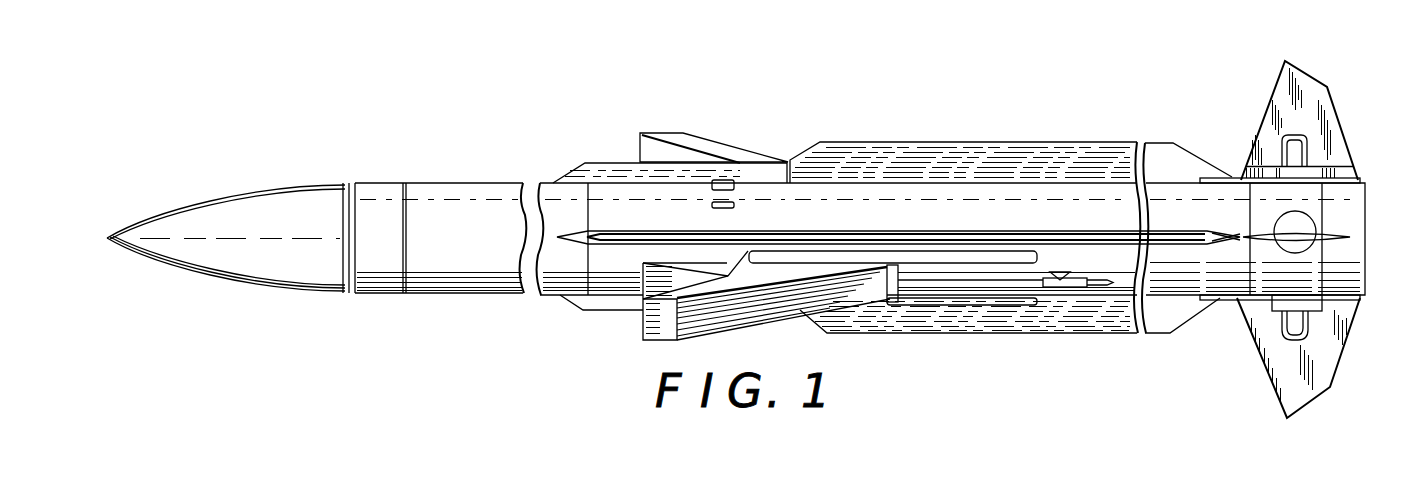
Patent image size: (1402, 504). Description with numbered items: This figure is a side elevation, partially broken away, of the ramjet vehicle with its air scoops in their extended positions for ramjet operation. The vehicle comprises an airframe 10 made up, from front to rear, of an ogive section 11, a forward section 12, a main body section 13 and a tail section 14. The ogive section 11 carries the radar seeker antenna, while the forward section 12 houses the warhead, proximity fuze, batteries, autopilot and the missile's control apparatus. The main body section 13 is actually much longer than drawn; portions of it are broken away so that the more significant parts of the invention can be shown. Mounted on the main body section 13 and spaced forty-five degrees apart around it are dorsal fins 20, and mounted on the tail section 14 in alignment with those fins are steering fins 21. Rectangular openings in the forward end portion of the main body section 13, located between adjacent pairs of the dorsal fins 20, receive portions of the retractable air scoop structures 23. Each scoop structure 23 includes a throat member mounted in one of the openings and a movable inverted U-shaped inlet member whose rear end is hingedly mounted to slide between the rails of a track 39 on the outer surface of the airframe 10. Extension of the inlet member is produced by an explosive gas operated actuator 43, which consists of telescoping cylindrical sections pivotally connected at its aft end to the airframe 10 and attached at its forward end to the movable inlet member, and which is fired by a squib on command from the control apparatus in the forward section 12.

The airframe 10 is at (494, 166).
The ogive section 11 is at (282, 193).
The forward section 12 is at (437, 186).
The main body section 13 is at (852, 217).
The tail section 14 is at (1177, 208).
The dorsal fins 20 is at (630, 163).
The steering fins 21 is at (1333, 122).
The retractable air scoop structures 23 is at (722, 316).
The track 39 is at (1009, 256).
The actuator 43 is at (1070, 282).